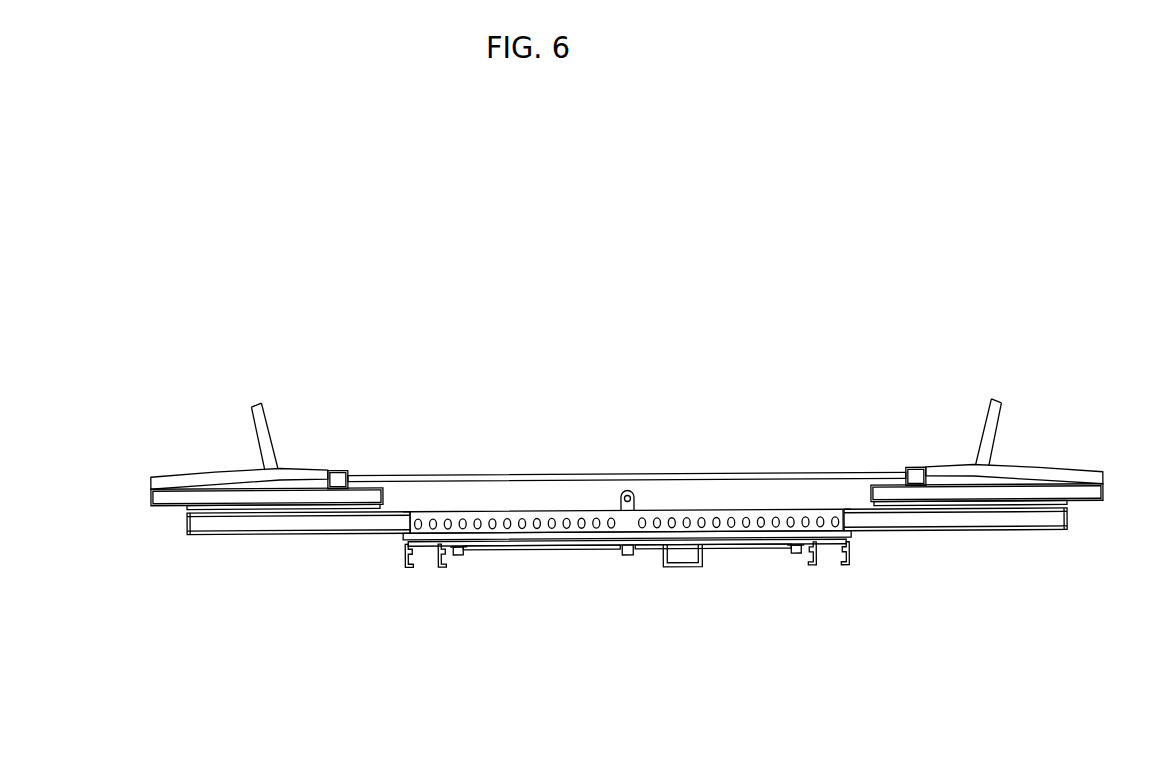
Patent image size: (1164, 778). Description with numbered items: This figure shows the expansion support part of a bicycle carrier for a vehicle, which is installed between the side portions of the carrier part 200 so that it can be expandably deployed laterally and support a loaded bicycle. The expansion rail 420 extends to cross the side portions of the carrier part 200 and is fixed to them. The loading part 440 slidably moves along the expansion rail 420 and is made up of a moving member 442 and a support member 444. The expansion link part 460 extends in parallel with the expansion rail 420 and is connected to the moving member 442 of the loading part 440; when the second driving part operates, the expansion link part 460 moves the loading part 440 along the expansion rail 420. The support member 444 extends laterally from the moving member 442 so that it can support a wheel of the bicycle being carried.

The carrier part 200 is at (693, 567).
The expansion rail 420 is at (789, 510).
The loading part 440 is at (1014, 428).
The moving member 442 is at (915, 466).
The support member 444 is at (1043, 471).
The expansion link part 460 is at (697, 475).